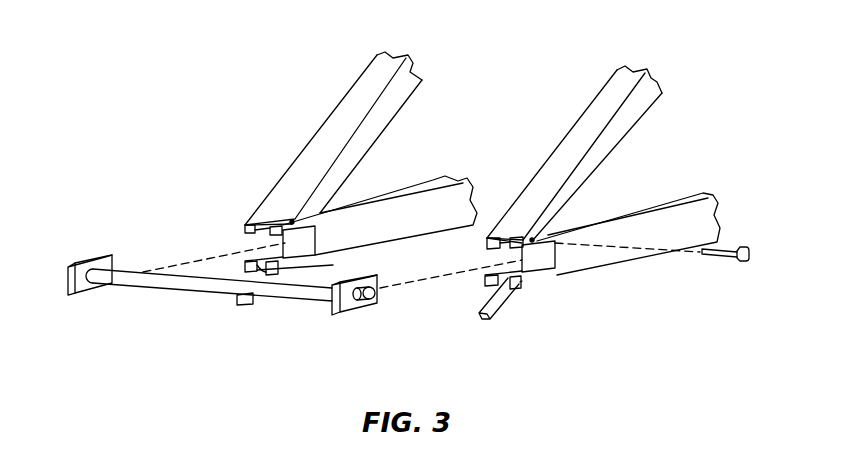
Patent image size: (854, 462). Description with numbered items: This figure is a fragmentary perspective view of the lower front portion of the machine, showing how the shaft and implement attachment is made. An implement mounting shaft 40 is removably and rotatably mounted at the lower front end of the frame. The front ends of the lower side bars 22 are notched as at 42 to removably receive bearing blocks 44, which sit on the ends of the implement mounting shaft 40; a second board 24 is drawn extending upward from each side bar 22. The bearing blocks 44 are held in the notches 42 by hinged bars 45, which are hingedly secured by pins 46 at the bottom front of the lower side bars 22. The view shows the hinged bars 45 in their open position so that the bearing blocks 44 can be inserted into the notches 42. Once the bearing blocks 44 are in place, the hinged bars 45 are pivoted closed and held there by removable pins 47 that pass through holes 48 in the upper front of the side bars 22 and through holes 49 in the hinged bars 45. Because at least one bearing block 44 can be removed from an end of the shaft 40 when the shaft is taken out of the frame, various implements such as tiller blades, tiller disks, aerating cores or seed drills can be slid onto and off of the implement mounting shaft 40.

The lower side bar 22 is at (445, 203).
The end board 24 is at (392, 100).
The implement mounting shaft 40 is at (292, 290).
The notch 42 is at (280, 245).
The bearing block 44 is at (72, 285).
The hinged bar 45 is at (233, 302).
The pin 46 is at (273, 276).
The removable pin 47 is at (723, 248).
The hole 48 is at (292, 222).
The hole 49 is at (242, 303).